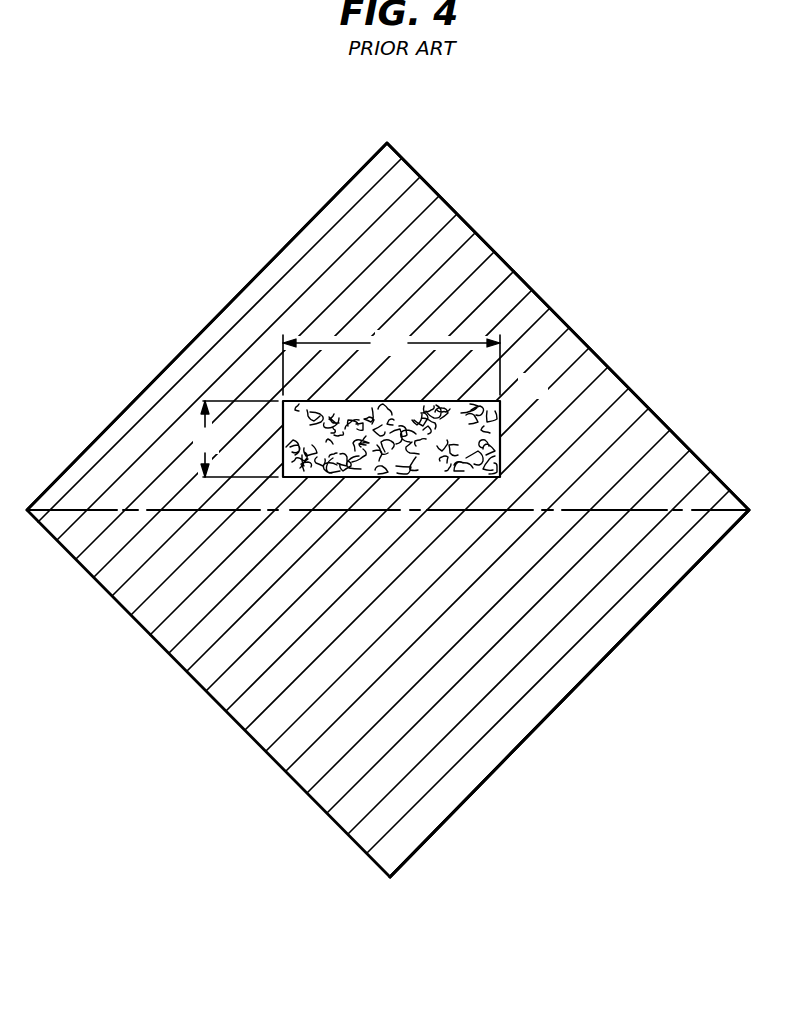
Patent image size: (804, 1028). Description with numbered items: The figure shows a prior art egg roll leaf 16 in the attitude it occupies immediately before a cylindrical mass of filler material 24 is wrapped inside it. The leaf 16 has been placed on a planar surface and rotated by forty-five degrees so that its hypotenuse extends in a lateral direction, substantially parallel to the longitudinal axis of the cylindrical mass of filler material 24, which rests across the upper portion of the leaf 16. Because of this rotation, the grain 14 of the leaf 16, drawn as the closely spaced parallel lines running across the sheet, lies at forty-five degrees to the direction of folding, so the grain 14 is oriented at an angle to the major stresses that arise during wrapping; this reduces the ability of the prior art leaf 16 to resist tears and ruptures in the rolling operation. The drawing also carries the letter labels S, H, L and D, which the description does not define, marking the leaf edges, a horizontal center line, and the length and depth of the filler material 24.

The grain 14 is at (498, 724).
The egg roll leaf 16 is at (467, 782).
The cylindrical mass of filler material 24 is at (478, 421).
The side S is at (237, 294).
The horizontal center line H is at (67, 511).
The length L is at (391, 362).
The depth D is at (235, 439).